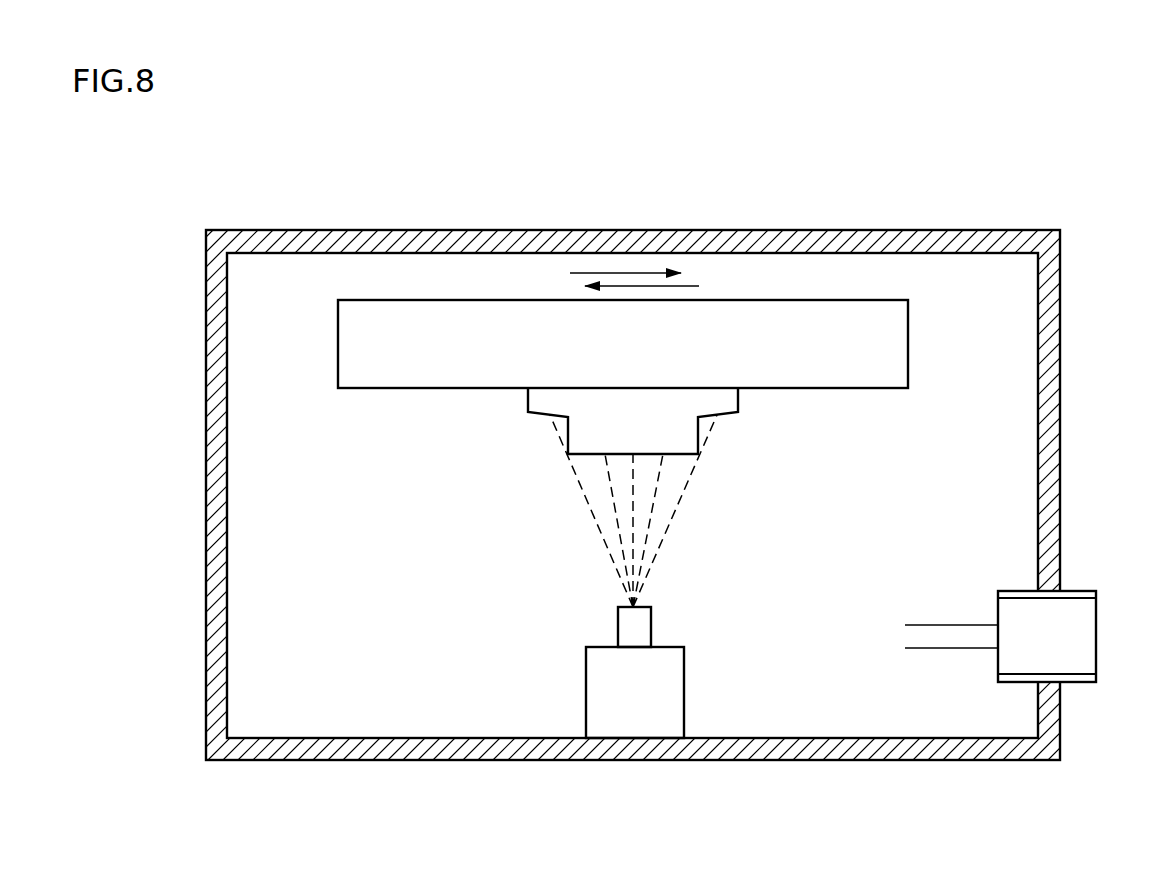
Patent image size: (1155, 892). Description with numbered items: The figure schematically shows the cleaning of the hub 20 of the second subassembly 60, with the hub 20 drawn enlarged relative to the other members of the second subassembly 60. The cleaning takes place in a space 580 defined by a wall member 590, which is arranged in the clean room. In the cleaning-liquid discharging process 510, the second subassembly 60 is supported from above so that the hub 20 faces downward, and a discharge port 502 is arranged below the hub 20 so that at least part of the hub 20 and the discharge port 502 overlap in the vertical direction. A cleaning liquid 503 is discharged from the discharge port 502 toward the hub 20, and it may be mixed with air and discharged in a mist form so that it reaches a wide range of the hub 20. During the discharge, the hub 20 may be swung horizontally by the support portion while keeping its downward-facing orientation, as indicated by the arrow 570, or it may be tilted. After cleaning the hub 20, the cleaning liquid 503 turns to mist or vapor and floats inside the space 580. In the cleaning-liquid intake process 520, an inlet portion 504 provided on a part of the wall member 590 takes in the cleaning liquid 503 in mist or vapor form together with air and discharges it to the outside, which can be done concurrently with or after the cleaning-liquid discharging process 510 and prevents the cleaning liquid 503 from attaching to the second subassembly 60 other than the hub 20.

The wall member 590 is at (320, 241).
The space 580 is at (434, 272).
The arrow 570 is at (617, 273).
The second subassembly 60 is at (858, 312).
The hub 20 is at (730, 400).
The cleaning liquid 503 is at (672, 540).
The discharge port 502 is at (617, 613).
The cleaning-liquid discharging process 510 is at (573, 552).
The cleaning-liquid intake process 520 is at (953, 603).
The inlet portion 504 is at (995, 676).